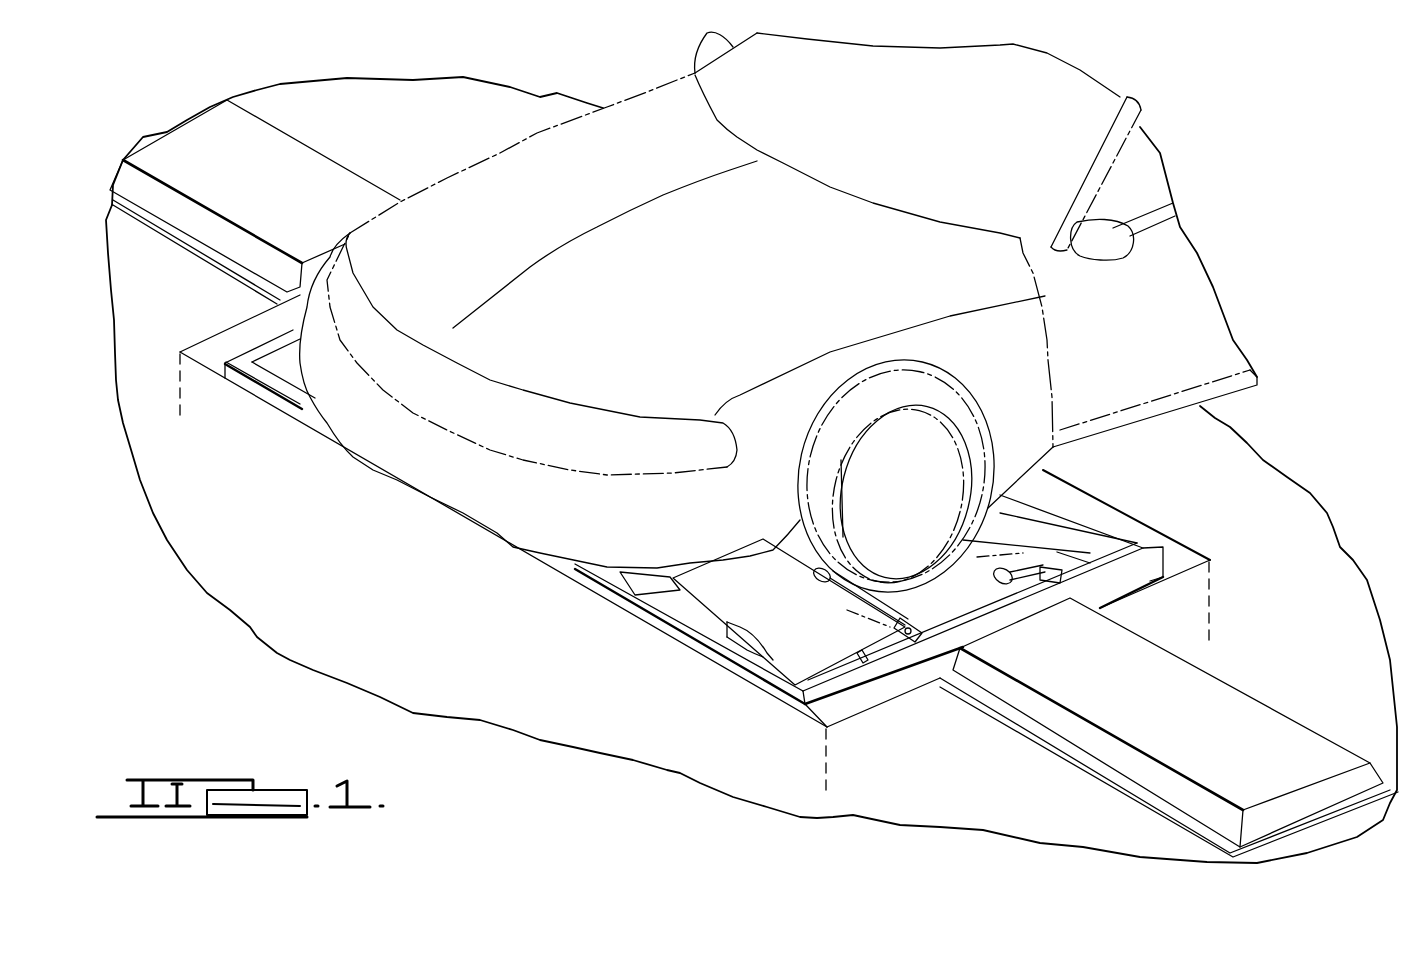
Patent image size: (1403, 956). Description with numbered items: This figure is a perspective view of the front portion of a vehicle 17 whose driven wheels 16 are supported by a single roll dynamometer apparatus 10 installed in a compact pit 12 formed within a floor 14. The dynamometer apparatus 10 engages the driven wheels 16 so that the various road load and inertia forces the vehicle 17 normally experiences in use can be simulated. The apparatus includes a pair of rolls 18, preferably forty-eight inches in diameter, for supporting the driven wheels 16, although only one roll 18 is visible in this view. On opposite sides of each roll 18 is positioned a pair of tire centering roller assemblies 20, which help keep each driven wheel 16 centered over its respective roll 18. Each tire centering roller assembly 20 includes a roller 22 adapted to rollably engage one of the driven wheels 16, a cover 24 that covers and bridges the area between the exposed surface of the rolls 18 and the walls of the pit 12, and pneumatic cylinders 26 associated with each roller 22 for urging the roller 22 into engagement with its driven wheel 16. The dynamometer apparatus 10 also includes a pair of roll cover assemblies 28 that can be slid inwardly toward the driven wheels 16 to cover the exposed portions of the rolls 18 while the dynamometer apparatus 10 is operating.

The single roll dynamometer apparatus 10 is at (696, 530).
The compact pit 12 is at (1103, 547).
The floor 14 is at (1320, 553).
The driven wheels 16 is at (812, 470).
The vehicle 17 is at (619, 142).
The rolls 18 is at (918, 590).
The tire centering roller assemblies 20 is at (810, 633).
The roller 22 is at (833, 603).
The cover 24 is at (665, 614).
The pneumatic cylinders 26 is at (718, 650).
The roll cover assemblies 28 is at (305, 177).